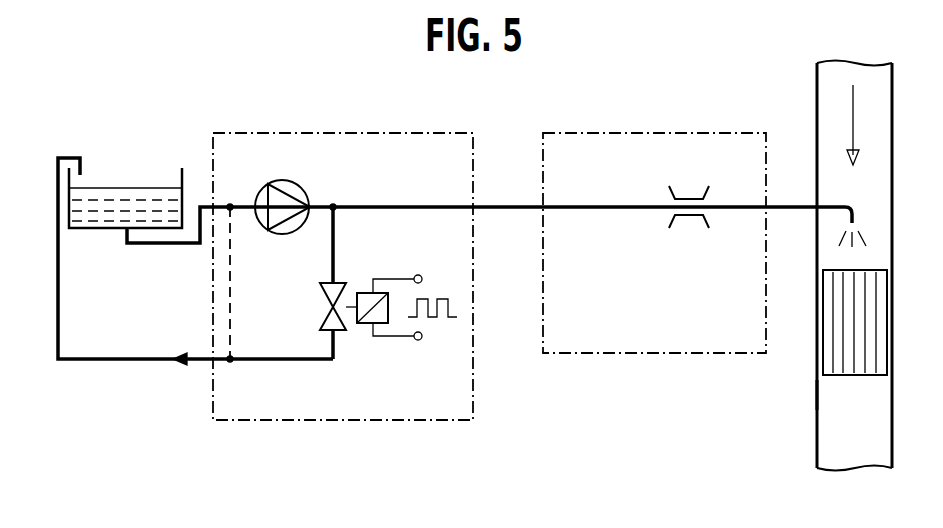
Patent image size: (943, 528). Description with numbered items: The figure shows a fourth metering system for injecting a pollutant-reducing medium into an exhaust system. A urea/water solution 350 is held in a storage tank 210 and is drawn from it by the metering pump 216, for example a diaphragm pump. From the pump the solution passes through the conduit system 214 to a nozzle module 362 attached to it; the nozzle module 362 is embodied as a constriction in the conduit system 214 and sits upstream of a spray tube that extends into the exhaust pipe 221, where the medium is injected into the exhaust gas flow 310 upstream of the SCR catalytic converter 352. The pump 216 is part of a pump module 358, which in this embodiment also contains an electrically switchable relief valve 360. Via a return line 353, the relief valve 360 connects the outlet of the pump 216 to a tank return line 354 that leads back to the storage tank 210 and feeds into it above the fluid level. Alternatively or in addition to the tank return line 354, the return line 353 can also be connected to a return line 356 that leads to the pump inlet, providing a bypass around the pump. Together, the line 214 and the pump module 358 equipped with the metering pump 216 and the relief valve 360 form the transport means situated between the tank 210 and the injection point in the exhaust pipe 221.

The storage tank 210 is at (91, 230).
The conduit system 214 is at (168, 246).
The metering pump 216 is at (295, 186).
The exhaust pipe 221 is at (816, 395).
The exhaust gas flow 310 is at (852, 100).
The urea/water solution 350 is at (129, 200).
The SCR catalytic converter 352 is at (860, 370).
The return line 353 is at (297, 362).
The tank return line 354 is at (128, 362).
The return line leading to the pump inlet 356 is at (231, 264).
The pump module 358 is at (428, 421).
The relief valve 360 is at (355, 328).
The nozzle module 362 is at (621, 354).